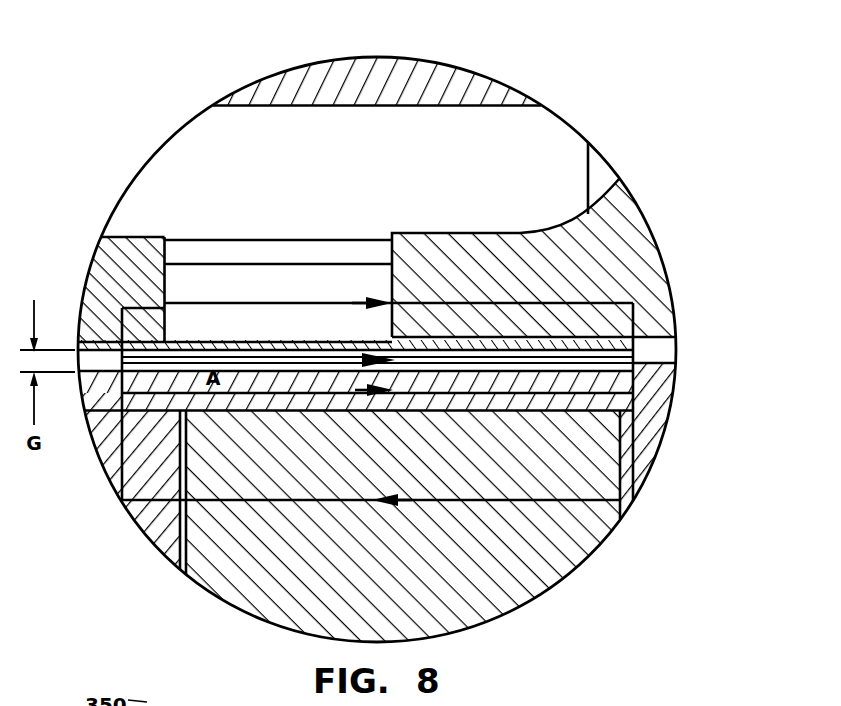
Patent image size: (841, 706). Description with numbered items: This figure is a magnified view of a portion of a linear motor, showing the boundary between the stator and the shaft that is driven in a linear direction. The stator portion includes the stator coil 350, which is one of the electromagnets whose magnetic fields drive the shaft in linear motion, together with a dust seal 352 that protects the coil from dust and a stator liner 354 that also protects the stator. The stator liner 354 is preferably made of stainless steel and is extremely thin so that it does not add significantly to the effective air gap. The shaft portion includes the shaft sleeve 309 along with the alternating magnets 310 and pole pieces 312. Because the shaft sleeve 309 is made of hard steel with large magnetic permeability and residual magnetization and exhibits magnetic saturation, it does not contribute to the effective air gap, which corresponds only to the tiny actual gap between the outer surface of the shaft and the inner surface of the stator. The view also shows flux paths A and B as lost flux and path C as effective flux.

The stator coil 350 is at (456, 65).
The dust seal 352 is at (195, 240).
The stator liner 354 is at (675, 340).
The shaft sleeve 309 is at (660, 382).
The alternating magnets 310 is at (507, 615).
The pole pieces 312 is at (90, 453).